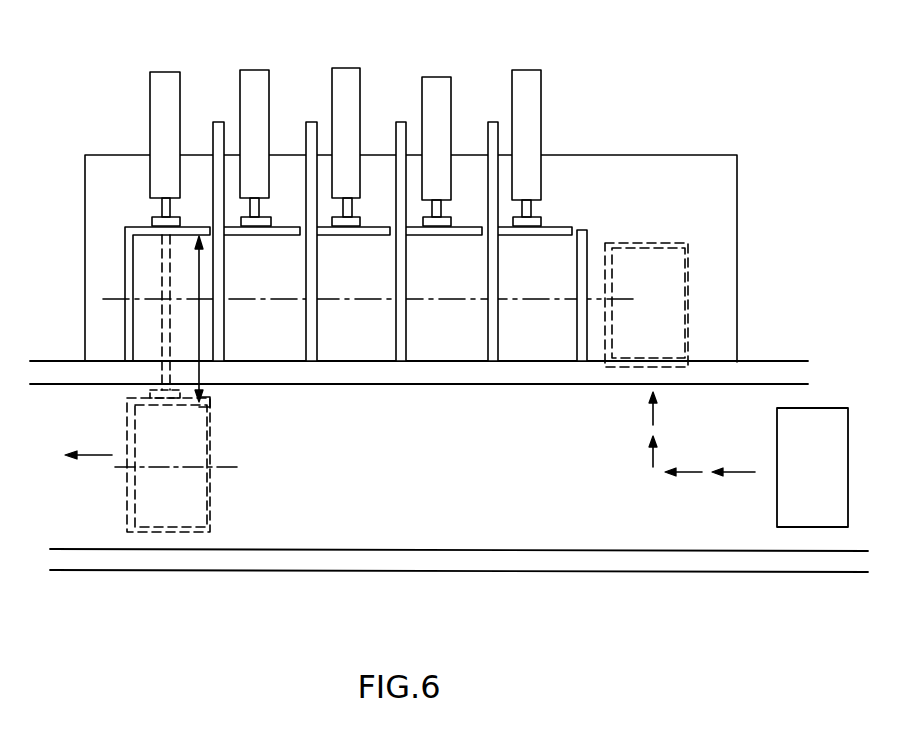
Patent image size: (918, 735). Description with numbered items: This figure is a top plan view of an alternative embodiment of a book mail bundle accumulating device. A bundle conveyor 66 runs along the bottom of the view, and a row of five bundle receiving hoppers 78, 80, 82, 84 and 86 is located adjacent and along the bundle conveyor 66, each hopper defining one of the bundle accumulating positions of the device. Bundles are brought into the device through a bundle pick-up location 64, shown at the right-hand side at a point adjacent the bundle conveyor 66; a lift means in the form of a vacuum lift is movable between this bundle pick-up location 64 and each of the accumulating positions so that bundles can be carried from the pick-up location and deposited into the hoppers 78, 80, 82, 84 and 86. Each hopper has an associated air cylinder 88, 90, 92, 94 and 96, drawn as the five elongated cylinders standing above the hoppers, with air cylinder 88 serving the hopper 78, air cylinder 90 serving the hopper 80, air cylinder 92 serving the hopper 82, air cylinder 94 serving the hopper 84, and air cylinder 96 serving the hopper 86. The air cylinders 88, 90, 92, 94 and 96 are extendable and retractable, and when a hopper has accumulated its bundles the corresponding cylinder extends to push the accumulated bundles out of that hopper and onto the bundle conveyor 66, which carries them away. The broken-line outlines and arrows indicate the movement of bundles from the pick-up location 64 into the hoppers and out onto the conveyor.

The bundle pick-up location 64 is at (668, 428).
The bundle conveyor 66 is at (283, 530).
The bundle receiving hopper 78 is at (498, 340).
The bundle receiving hopper 80 is at (406, 333).
The bundle receiving hopper 82 is at (318, 340).
The bundle receiving hopper 84 is at (224, 338).
The bundle receiving hopper 86 is at (134, 340).
The air cylinder 88 is at (527, 105).
The air cylinder 90 is at (438, 105).
The air cylinder 92 is at (352, 117).
The air cylinder 94 is at (262, 98).
The air cylinder 96 is at (172, 98).